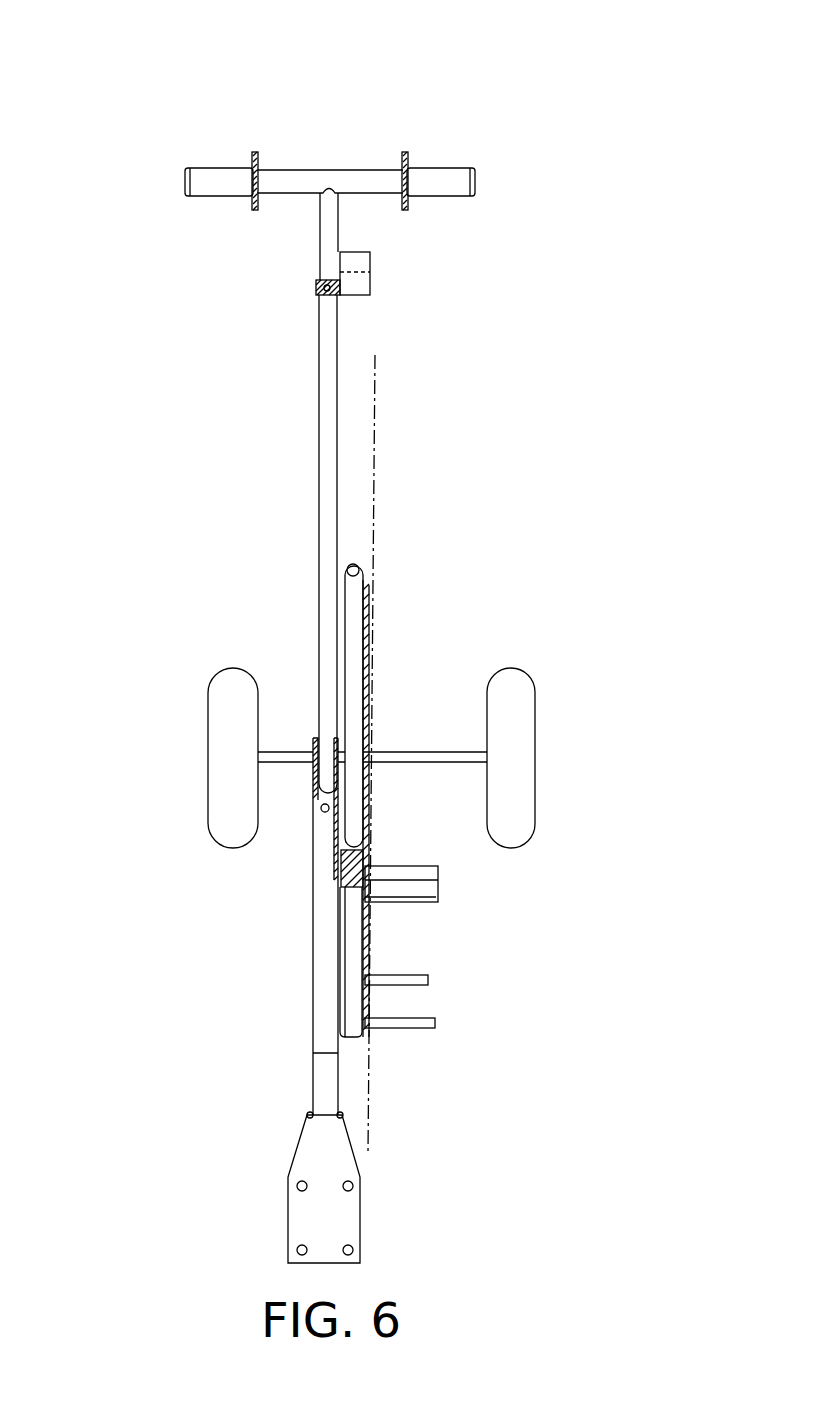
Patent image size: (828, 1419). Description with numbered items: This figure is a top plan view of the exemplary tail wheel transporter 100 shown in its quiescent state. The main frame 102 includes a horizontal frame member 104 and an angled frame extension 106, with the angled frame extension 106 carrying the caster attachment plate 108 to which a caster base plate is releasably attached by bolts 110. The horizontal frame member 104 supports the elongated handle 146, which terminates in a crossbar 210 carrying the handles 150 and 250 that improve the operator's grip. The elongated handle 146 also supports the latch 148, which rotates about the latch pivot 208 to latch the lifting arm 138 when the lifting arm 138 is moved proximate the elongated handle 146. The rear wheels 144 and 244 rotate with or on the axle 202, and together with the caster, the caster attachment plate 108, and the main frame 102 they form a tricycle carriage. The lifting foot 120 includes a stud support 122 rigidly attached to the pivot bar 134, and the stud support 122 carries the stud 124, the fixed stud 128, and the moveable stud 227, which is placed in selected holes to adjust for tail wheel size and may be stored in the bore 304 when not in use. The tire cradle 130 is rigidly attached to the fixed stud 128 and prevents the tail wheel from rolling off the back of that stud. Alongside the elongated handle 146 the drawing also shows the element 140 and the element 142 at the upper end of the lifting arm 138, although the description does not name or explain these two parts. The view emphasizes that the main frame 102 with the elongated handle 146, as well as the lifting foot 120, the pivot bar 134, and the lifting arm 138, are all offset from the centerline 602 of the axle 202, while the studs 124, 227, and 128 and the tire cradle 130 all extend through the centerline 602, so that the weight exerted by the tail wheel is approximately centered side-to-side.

The tail wheel transporter 100 is at (258, 76).
The main frame 102 is at (258, 951).
The horizontal frame member 104 is at (325, 917).
The angled frame extension 106 is at (325, 1085).
The caster attachment plate 108 is at (310, 1143).
The bolts 110 is at (348, 1248).
The lifting foot 120 is at (476, 952).
The stud support 122 is at (350, 1022).
The stud 124 is at (418, 1024).
The fixed stud 128 is at (418, 908).
The tire cradle 130 is at (425, 882).
The pivot bar 134 is at (345, 858).
The lifting arm 138 is at (385, 631).
The wheel support tube 140 is at (352, 704).
The pivot bolt 142 is at (356, 586).
The rear wheel 144 is at (520, 705).
The elongated handle 146 is at (328, 463).
The latch 148 is at (358, 292).
The handle 150 is at (452, 175).
The axle 202 is at (281, 757).
The latch pivot 208 is at (323, 290).
The crossbar 210 is at (305, 178).
The moveable stud 227 is at (418, 985).
The rear wheel 244 is at (231, 705).
The handle 250 is at (205, 178).
The bore 304 is at (323, 812).
The centerline 602 is at (373, 418).